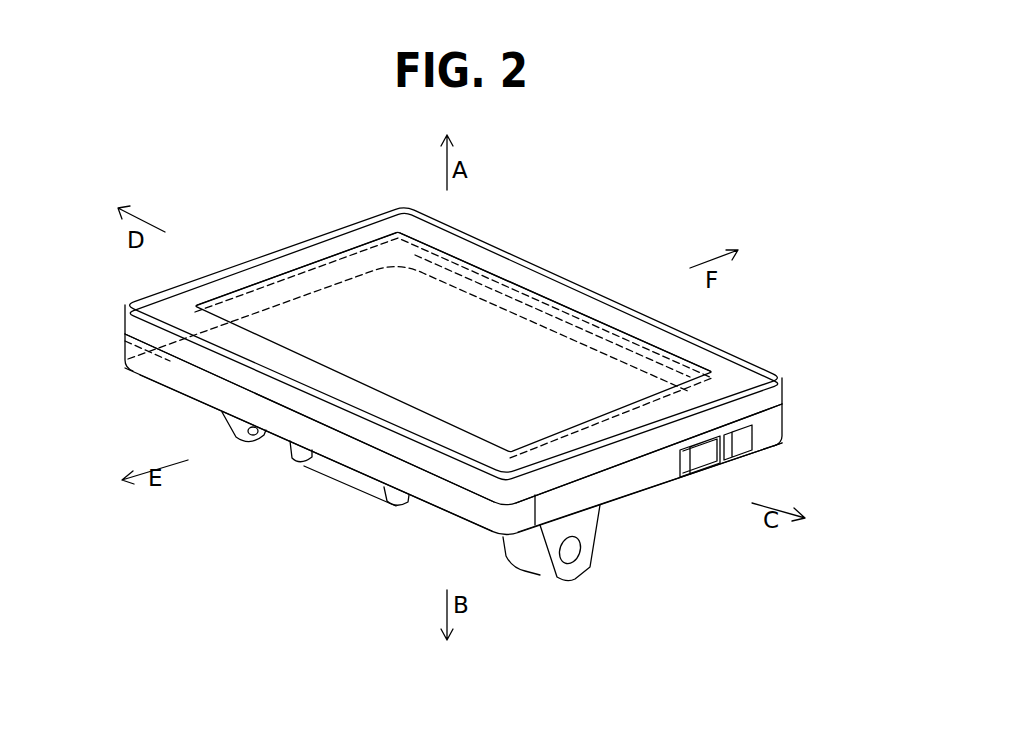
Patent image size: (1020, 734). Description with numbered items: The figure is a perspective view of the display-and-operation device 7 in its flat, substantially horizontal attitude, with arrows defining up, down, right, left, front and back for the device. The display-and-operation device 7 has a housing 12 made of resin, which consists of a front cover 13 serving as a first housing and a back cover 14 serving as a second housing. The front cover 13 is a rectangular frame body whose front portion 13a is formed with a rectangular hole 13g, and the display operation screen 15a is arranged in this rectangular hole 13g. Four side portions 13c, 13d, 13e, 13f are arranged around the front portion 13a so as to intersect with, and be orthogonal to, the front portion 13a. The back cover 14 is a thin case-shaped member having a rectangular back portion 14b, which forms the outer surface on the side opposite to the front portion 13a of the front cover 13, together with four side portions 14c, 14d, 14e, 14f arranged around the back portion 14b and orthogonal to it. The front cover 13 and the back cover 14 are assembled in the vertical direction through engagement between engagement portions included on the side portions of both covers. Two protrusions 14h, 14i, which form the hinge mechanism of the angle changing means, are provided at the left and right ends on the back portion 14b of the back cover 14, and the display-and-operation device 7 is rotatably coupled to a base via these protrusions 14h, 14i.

The display-and-operation device 7 is at (568, 228).
The housing 12 is at (281, 497).
The front cover 13 is at (345, 432).
The back cover 14 is at (378, 474).
The front portion 13a is at (480, 255).
The side portion 13c is at (600, 457).
The side portion 13d is at (290, 248).
The side portion 13e is at (216, 362).
The side portion 13f is at (668, 338).
The rectangular hole 13g is at (605, 332).
The back portion 14b is at (483, 413).
The side portion 14c is at (656, 474).
The side portion 14d is at (257, 298).
The side portion 14e is at (430, 493).
The side portion 14f is at (728, 362).
The protrusion 14h is at (575, 568).
The protrusion 14i is at (227, 437).
The display operation screen 15a is at (380, 275).